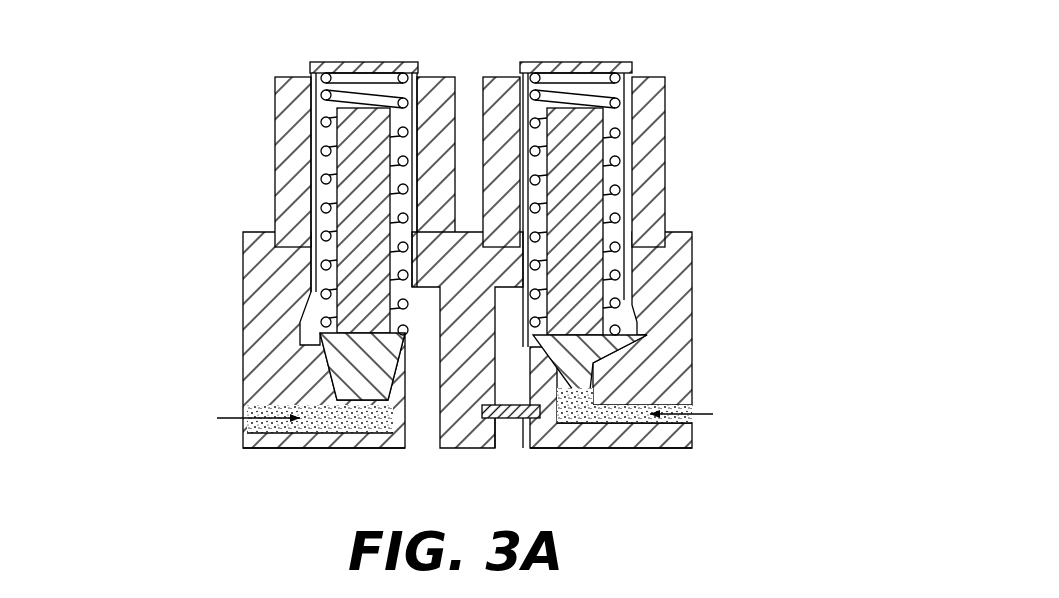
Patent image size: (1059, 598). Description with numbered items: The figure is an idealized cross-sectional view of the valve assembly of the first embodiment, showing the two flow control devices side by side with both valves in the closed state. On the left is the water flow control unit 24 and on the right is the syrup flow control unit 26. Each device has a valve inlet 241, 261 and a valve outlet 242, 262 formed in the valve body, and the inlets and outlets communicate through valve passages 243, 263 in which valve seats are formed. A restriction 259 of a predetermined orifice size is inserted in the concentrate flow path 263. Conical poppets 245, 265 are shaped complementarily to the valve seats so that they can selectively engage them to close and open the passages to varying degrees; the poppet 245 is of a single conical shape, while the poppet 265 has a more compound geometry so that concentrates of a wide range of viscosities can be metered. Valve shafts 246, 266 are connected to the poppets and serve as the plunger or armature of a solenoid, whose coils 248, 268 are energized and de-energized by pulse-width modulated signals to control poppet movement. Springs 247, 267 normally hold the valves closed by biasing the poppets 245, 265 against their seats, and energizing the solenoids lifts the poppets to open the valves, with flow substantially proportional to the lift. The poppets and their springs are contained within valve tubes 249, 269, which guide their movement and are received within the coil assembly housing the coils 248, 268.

The water flow control unit 24 is at (243, 343).
The valve inlet 241 is at (243, 425).
The valve outlet 242 is at (422, 440).
The valve passage 243 is at (300, 197).
The poppet 245 is at (343, 367).
The valve shaft 246 is at (330, 178).
The spring 247 is at (305, 98).
The coil 248 is at (273, 107).
The valve tube 249 is at (368, 62).
The restriction 259 is at (509, 422).
The syrup flow control unit 26 is at (703, 365).
The valve inlet 261 is at (692, 422).
The valve outlet 262 is at (530, 445).
The valve passage 263 is at (628, 220).
The poppet 265 is at (633, 340).
The valve shaft 266 is at (603, 145).
The spring 267 is at (627, 183).
The coil 268 is at (665, 108).
The valve tube 269 is at (575, 62).